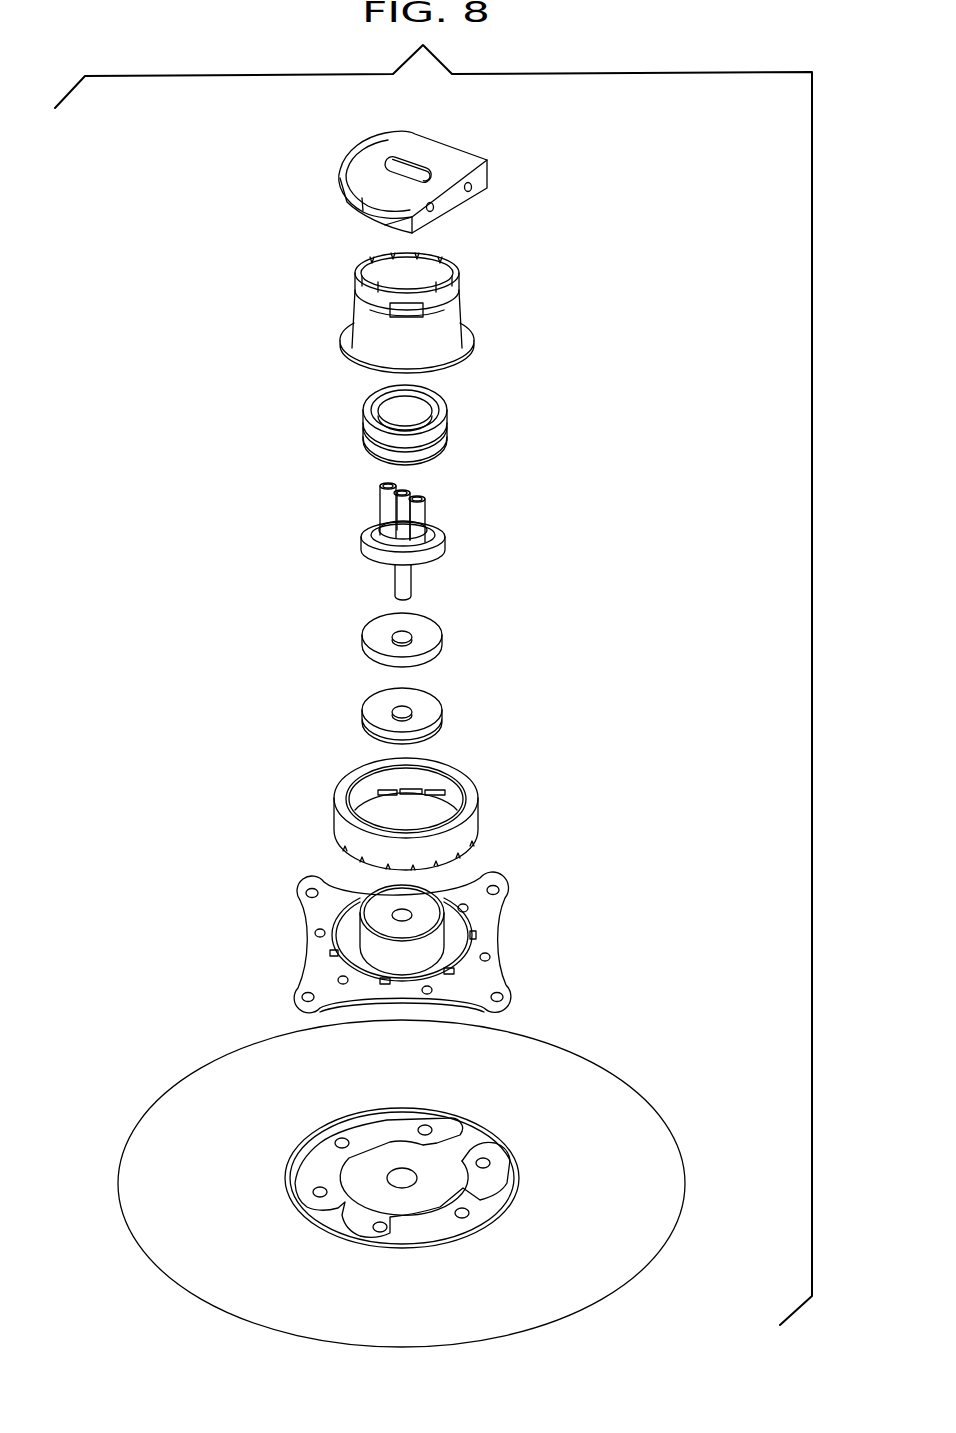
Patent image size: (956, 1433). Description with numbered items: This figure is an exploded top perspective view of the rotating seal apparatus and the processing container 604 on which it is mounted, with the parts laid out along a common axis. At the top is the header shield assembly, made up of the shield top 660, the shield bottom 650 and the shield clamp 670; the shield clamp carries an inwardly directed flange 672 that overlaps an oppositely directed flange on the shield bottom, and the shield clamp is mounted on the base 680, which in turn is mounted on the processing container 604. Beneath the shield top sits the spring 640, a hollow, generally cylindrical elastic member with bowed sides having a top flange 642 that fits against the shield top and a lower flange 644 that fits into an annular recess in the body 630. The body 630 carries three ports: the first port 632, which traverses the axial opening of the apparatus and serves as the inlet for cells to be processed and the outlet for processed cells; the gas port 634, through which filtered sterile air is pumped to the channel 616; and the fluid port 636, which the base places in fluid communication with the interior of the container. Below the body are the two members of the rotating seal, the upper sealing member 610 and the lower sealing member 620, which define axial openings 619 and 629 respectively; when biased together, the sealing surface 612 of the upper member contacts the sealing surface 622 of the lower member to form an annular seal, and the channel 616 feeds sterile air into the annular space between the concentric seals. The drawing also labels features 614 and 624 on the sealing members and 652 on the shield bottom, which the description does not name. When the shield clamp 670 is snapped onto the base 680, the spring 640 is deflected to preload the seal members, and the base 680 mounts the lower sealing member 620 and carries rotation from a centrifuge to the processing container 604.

The processing container 604 is at (565, 1060).
The upper sealing member 610 is at (424, 635).
The sealing surface 612 is at (380, 667).
The top surface of first disc 614 is at (372, 635).
The channel 616 is at (387, 628).
The axial opening 619 is at (402, 635).
The lower sealing member 620 is at (426, 722).
The sealing surface 622 is at (373, 703).
The bottom surface of second disc 624 is at (378, 738).
The axial opening 629 is at (408, 705).
The body 630 is at (410, 541).
The first port 632 is at (412, 488).
The gas port 634 is at (380, 495).
The fluid port 636 is at (417, 498).
The spring 640 is at (417, 419).
The top flange 642 is at (363, 403).
The lower flange 644 is at (367, 448).
The shield bottom 650 is at (466, 313).
The sleeve top rim 652 is at (462, 309).
The shield top 660 is at (518, 180).
The shield clamp 670 is at (467, 814).
The inwardly directed flange 672 is at (460, 778).
The base 680 is at (500, 892).